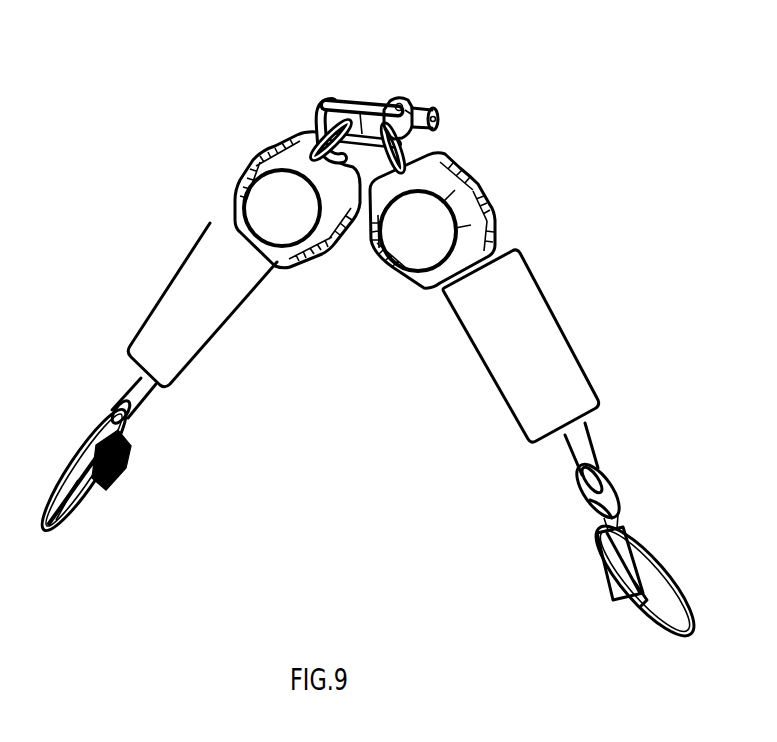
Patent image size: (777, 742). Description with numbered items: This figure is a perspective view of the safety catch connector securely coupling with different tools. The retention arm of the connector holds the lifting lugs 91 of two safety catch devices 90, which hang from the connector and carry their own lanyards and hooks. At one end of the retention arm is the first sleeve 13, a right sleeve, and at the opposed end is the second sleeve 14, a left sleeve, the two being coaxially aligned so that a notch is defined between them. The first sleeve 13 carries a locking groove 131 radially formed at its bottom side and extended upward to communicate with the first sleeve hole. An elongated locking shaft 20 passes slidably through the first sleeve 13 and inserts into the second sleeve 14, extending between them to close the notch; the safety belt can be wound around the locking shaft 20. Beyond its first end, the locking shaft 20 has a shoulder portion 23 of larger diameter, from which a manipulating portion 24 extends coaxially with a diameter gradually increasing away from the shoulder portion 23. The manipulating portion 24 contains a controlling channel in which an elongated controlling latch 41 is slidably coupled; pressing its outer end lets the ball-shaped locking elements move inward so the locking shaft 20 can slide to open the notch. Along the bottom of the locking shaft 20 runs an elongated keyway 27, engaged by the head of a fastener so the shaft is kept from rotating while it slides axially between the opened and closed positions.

The first sleeve 13 is at (403, 100).
The locking groove 131 is at (399, 103).
The second sleeve 14 is at (326, 98).
The locking shaft 20 is at (343, 98).
The shoulder portion 23 is at (410, 104).
The manipulating portion 24 is at (430, 108).
The keyway 27 is at (376, 134).
The controlling latch 41 is at (440, 114).
The safety catch device 90 is at (275, 152).
The lifting lug 91 is at (318, 113).